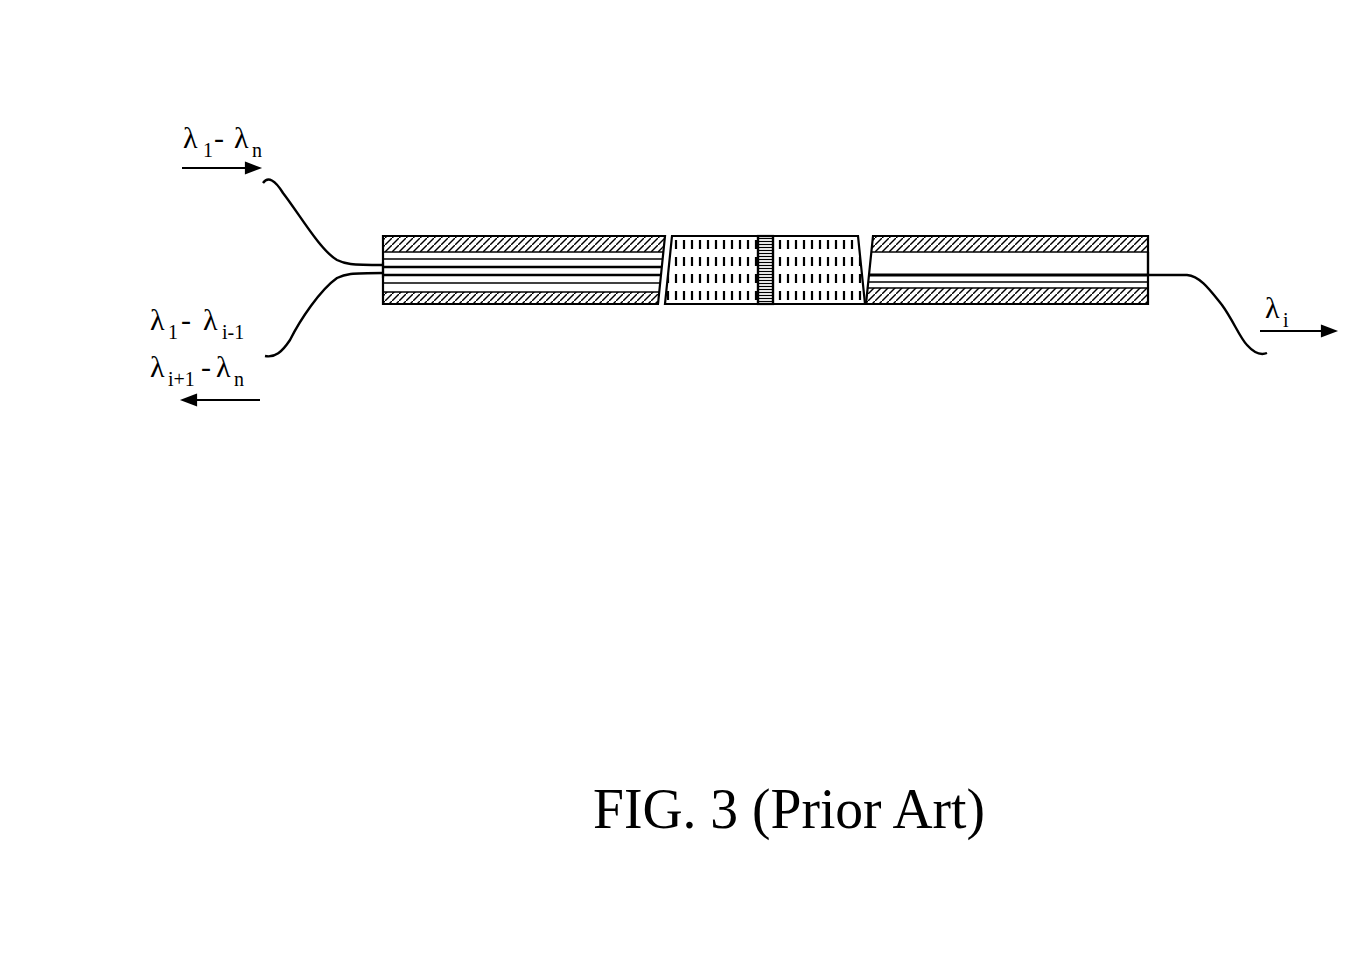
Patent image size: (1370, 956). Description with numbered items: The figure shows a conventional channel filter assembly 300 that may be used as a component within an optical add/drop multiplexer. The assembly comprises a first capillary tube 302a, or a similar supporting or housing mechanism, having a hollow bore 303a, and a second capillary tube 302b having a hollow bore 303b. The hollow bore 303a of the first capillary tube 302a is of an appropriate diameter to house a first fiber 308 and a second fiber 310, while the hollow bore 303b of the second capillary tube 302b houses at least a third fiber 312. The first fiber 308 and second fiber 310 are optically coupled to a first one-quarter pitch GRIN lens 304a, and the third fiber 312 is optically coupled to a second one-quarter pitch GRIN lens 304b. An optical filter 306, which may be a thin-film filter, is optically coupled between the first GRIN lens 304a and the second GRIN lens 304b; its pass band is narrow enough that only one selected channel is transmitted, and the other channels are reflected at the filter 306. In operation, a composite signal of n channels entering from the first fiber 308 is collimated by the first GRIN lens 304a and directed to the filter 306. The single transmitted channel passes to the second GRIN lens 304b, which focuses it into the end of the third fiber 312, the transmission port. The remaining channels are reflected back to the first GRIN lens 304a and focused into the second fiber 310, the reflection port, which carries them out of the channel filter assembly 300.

The channel filter assembly 300 is at (557, 74).
The first capillary tube 302a is at (433, 235).
The second capillary tube 302b is at (1022, 233).
The hollow bore 303a is at (382, 278).
The hollow bore 303b is at (1150, 262).
The first one-quarter pitch GRIN lens 304a is at (700, 235).
The second one-quarter pitch GRIN lens 304b is at (850, 235).
The optical filter 306 is at (766, 235).
The first fiber 308 is at (287, 190).
The second fiber 310 is at (285, 347).
The third fiber 312 is at (1247, 347).